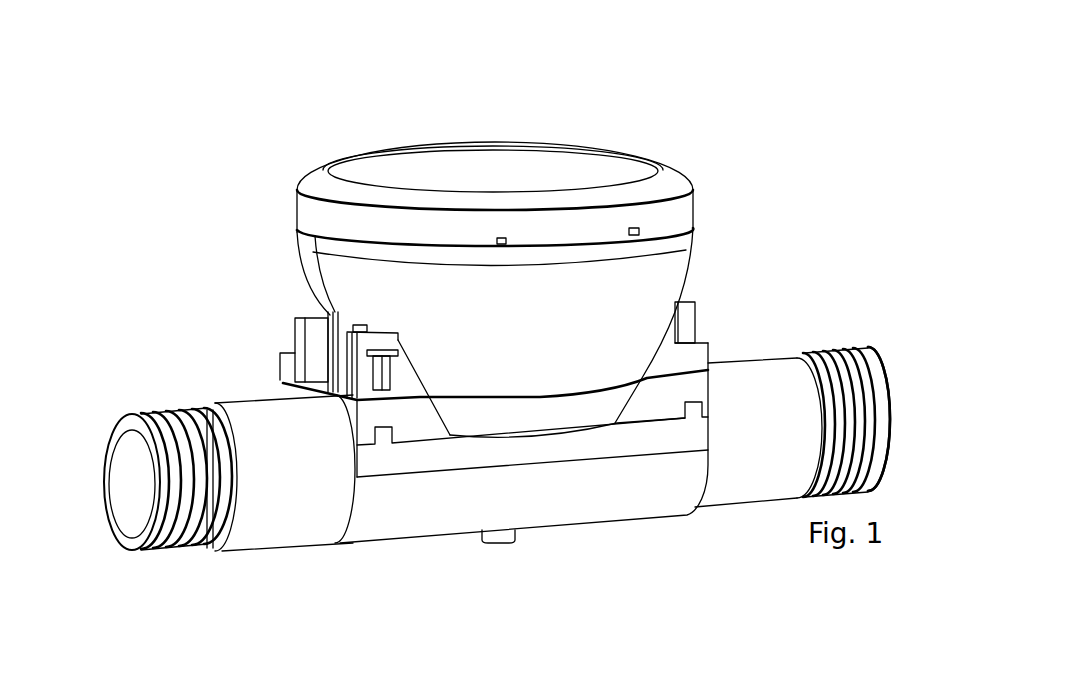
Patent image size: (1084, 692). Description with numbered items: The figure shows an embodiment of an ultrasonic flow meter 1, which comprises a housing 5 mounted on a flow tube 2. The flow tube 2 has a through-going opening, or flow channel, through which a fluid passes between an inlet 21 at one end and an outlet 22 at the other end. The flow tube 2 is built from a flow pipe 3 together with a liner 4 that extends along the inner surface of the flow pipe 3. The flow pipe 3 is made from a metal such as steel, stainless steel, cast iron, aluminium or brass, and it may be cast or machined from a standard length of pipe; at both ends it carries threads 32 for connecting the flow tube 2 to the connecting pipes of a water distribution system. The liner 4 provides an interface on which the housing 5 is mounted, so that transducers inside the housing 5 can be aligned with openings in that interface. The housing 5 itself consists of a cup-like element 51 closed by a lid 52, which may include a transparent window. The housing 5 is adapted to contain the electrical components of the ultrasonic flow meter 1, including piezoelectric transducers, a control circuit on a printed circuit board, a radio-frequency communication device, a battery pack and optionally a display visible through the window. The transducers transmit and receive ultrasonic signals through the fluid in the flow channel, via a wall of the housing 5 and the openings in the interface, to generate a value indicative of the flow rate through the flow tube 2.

The flow meter 1 is at (716, 108).
The flow tube 2 is at (758, 350).
The inlet 21 is at (132, 482).
The outlet 22 is at (887, 407).
The flow pipe 3 is at (277, 497).
The threads 32 is at (163, 410).
The liner 4 is at (123, 432).
The housing 5 is at (292, 277).
The cup-like element 51 is at (640, 292).
The lid 52 is at (333, 185).